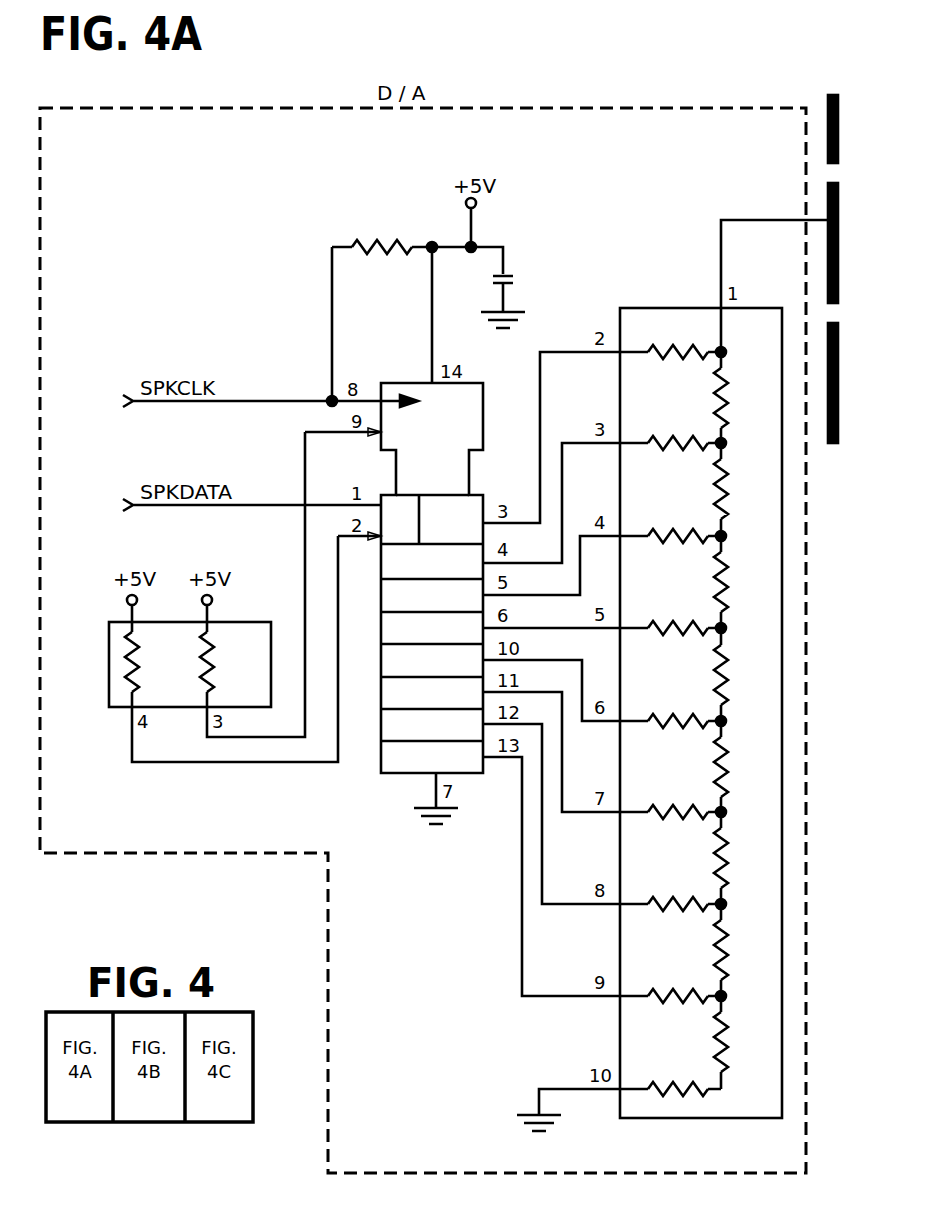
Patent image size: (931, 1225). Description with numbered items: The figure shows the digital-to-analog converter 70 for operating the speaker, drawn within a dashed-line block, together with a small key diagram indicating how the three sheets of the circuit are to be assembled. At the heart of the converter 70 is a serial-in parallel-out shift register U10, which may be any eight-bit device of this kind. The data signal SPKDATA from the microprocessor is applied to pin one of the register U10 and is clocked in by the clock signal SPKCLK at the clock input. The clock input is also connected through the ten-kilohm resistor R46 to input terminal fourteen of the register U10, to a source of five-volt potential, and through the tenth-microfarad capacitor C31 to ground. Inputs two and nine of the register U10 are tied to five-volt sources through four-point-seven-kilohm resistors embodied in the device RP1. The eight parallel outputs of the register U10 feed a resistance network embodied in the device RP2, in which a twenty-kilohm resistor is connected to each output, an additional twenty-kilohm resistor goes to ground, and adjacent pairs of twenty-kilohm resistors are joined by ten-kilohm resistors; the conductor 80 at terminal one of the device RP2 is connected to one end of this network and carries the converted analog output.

The digital-to-analog converter 70 is at (583, 108).
The conductor 80 is at (750, 220).
The serial-in parallel-out shift register U10 is at (425, 578).
The device containing 4.7K-ohm resistors RP1 is at (166, 656).
The resistance network device RP2 is at (701, 728).
The 10K-ohm resistor R46 is at (382, 224).
The 0.1 microfarad capacitor C31 is at (525, 276).